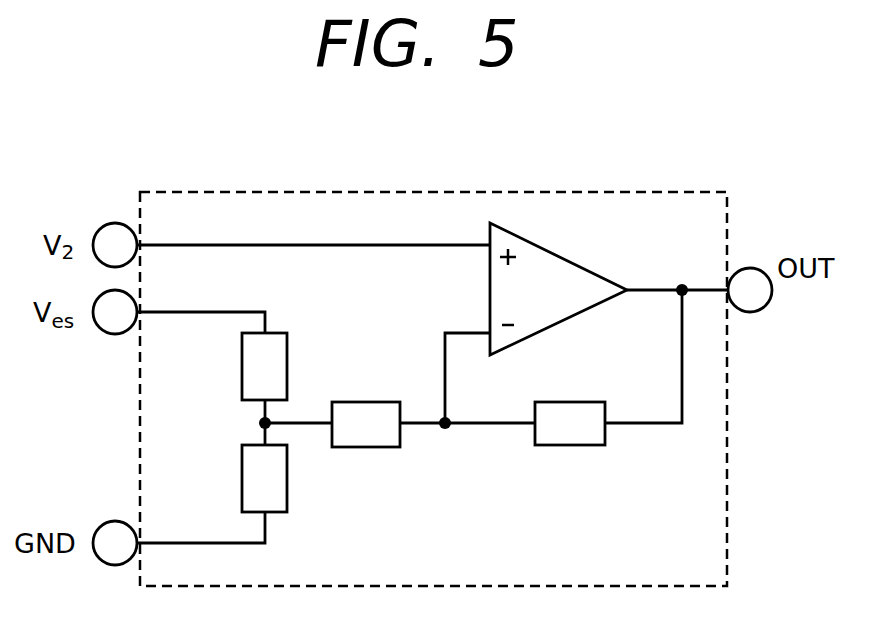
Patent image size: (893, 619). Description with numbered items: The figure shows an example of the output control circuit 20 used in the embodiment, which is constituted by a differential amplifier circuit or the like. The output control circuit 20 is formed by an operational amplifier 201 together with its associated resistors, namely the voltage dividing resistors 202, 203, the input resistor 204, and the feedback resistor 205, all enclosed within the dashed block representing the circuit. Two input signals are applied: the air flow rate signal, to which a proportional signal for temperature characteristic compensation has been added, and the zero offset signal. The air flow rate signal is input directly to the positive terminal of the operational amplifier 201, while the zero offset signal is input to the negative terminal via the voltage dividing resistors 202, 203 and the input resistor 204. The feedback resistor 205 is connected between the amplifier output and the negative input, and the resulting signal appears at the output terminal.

The output control circuit 20 is at (657, 191).
The operational amplifier 201 is at (560, 256).
The voltage dividing resistor 202 is at (282, 348).
The voltage dividing resistor 203 is at (287, 497).
The input resistor 204 is at (347, 401).
The feedback resistor 205 is at (550, 401).